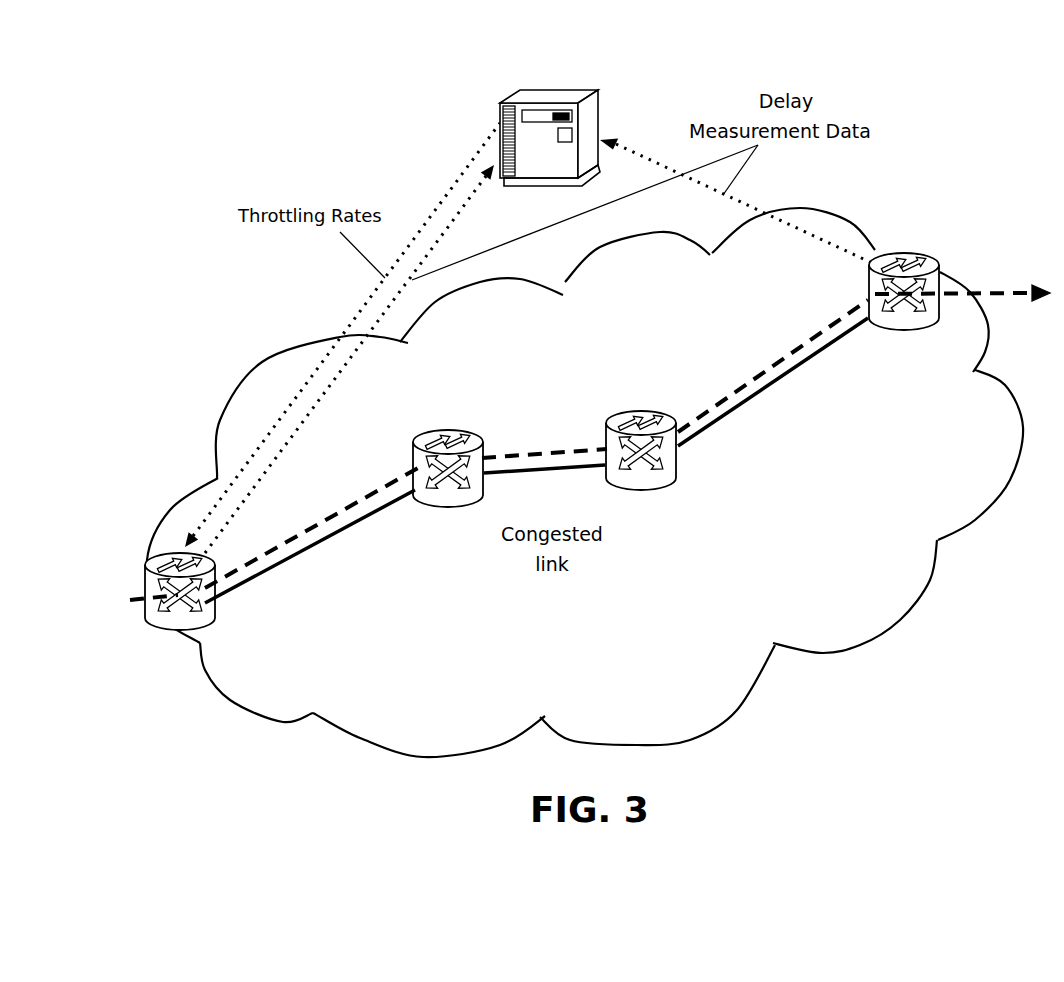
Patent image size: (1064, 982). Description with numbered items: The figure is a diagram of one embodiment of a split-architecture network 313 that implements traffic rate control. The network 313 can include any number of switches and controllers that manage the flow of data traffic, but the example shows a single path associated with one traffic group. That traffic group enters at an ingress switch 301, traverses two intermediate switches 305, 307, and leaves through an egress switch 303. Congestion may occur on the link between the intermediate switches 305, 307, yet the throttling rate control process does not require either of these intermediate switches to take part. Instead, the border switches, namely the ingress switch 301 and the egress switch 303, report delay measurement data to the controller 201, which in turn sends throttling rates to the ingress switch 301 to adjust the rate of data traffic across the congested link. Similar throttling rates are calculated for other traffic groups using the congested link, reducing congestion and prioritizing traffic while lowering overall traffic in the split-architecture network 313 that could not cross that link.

The controller 201 is at (600, 103).
The ingress switch 301 is at (145, 622).
The egress switch 303 is at (922, 256).
The intermediate switch 305 is at (448, 510).
The intermediate switch 307 is at (666, 490).
The split-architecture network 313 is at (714, 614).